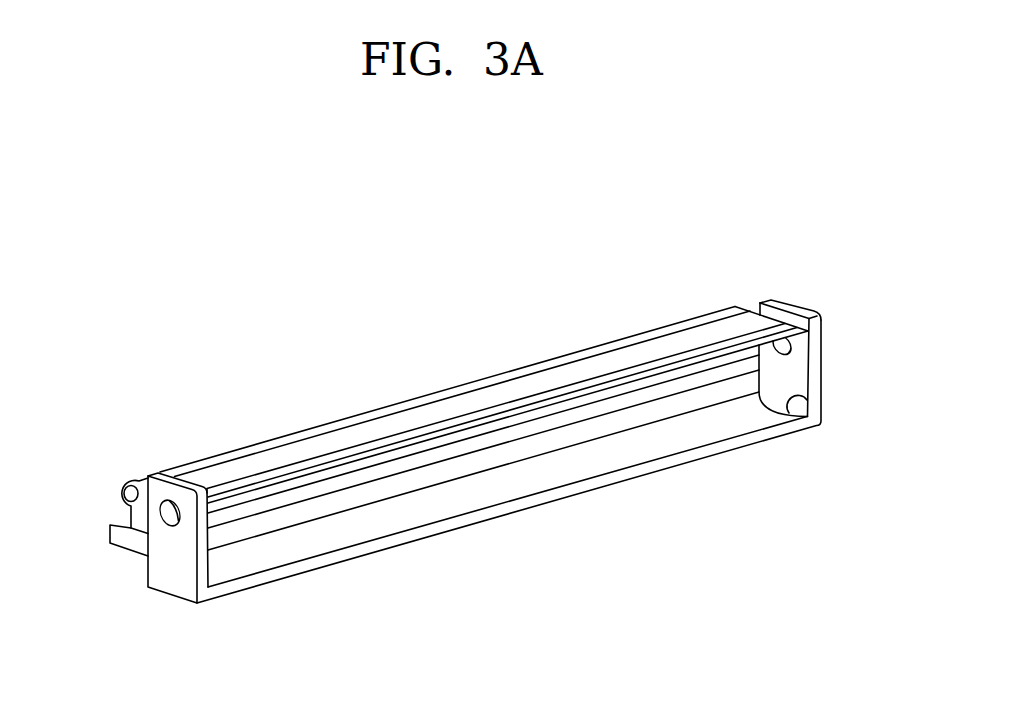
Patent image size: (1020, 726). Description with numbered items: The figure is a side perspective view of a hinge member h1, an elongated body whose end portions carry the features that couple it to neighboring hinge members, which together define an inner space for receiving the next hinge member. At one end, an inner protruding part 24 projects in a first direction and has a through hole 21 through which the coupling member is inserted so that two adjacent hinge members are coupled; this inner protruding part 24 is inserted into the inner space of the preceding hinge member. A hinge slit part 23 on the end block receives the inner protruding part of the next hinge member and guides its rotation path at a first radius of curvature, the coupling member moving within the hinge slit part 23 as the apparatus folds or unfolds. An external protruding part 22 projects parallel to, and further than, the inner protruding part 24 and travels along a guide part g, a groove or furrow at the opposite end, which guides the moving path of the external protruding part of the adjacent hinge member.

The hinge member h1 is at (758, 218).
The guide part g is at (807, 399).
The through hole 21 is at (130, 495).
The external protruding part 22 is at (112, 540).
The hinge slit part 23 is at (166, 508).
The inner protruding part 24 is at (119, 484).